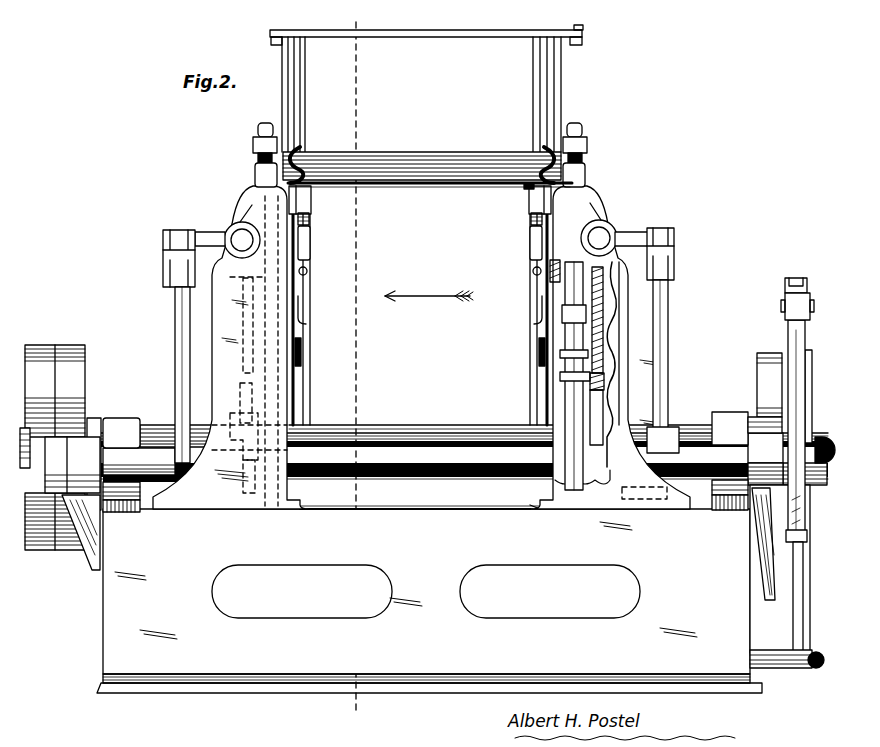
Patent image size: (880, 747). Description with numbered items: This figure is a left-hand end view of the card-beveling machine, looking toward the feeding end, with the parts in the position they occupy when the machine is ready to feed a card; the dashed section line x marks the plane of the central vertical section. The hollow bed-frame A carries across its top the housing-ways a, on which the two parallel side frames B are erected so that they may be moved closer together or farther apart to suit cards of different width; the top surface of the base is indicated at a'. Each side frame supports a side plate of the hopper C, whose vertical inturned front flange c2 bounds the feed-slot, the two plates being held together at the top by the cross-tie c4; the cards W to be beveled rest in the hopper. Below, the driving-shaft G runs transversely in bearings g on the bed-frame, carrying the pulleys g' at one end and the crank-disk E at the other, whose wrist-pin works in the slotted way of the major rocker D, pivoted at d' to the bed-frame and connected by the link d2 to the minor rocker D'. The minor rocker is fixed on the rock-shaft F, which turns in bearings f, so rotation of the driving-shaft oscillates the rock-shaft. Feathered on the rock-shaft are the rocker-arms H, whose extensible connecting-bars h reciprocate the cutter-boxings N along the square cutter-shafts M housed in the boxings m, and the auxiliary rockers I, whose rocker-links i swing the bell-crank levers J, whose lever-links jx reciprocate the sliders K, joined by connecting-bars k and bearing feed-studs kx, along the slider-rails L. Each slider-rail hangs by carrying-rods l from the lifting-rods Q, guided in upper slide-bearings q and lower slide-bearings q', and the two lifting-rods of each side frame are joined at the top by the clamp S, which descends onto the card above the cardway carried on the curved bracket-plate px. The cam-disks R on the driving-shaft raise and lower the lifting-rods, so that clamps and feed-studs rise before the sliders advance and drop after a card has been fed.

The section line x- x is at (353, 369).
The bed-frame A is at (429, 599).
The side frames or housings B is at (421, 347).
The hopper C is at (426, 60).
The front flange c2 is at (304, 104).
The cross-tie c4 is at (439, 30).
The cards W is at (427, 179).
The clamp S is at (302, 162).
The lifting-rod Q is at (254, 160).
The upper slide-bearing q is at (420, 175).
The lower slide-bearing q' is at (249, 525).
The pivot o is at (236, 218).
The cutter-boxing N is at (420, 209).
The cutter-shaft M is at (628, 222).
The boxing m is at (421, 250).
The extensible connecting-bar h is at (168, 262).
The rocker-arm H is at (177, 336).
The slider K is at (302, 216).
The connecting-bar k is at (306, 240).
The feed-stud kx is at (536, 186).
The slider-rail L is at (305, 258).
The lever-link jx is at (308, 272).
The carrying-rod l is at (300, 312).
The rocker-link i is at (299, 352).
The bell-crank lever J is at (420, 312).
The auxiliary rocker I is at (298, 420).
The curved bracket-plate px is at (245, 352).
The cam-disk R is at (604, 404).
The driving-shaft G is at (430, 425).
The rock-shaft F is at (467, 455).
The pulleys g' is at (60, 443).
The bearing g is at (425, 462).
The bearing f is at (414, 463).
The base top a' is at (415, 524).
The housing-way a is at (579, 518).
The crank-disk E is at (757, 372).
The link d2 is at (788, 292).
The minor rocker D' is at (806, 485).
The major rocker D is at (781, 501).
The pivot d' is at (787, 675).